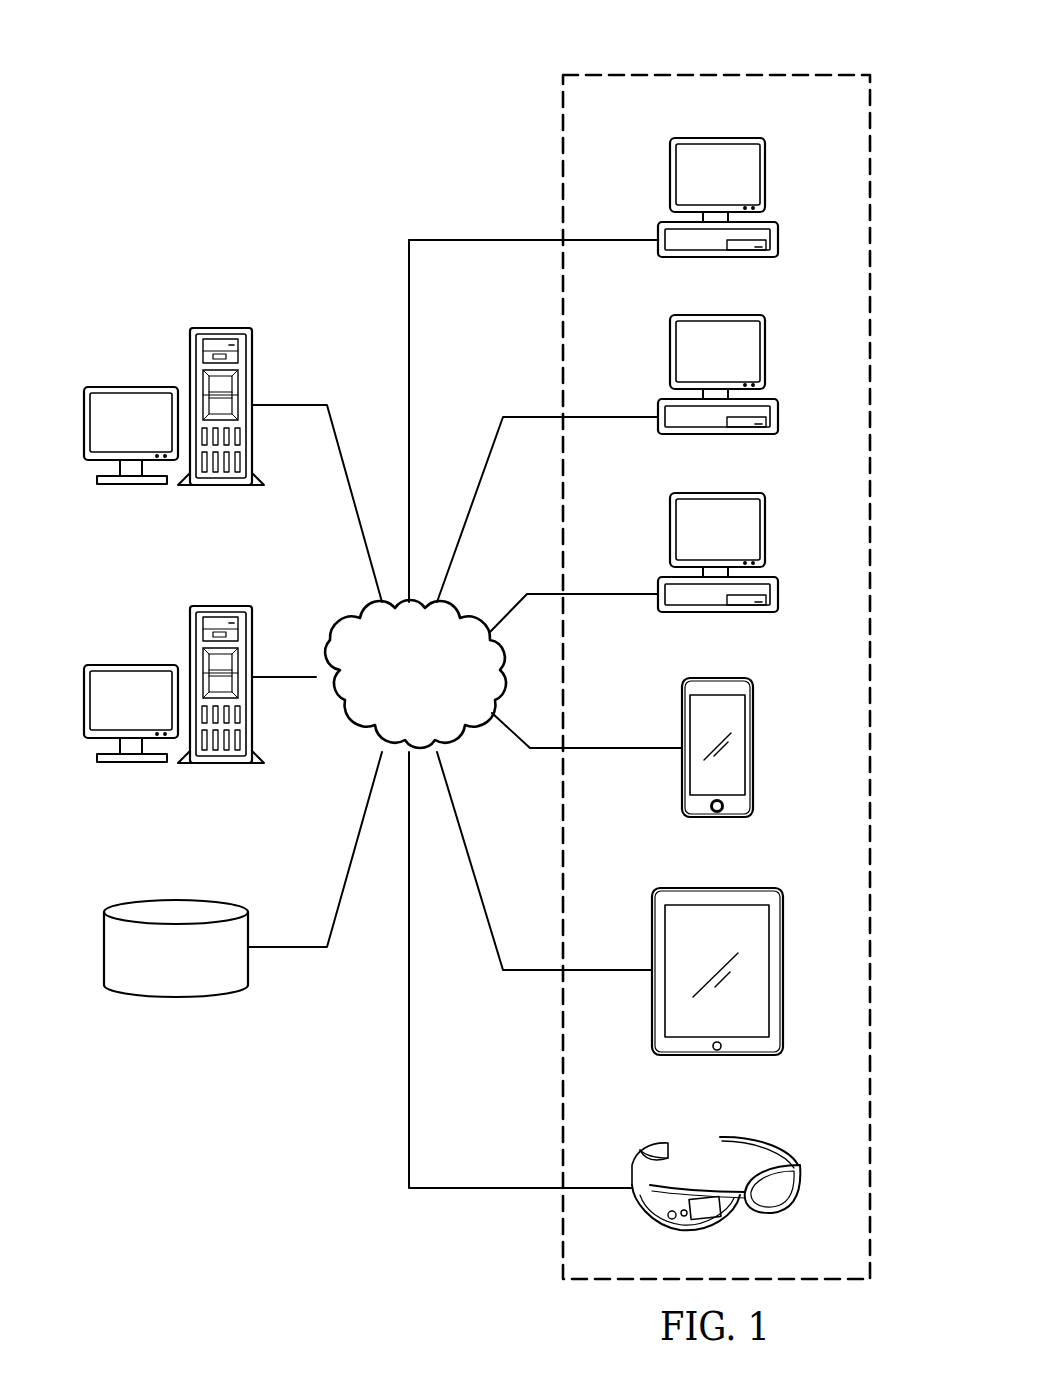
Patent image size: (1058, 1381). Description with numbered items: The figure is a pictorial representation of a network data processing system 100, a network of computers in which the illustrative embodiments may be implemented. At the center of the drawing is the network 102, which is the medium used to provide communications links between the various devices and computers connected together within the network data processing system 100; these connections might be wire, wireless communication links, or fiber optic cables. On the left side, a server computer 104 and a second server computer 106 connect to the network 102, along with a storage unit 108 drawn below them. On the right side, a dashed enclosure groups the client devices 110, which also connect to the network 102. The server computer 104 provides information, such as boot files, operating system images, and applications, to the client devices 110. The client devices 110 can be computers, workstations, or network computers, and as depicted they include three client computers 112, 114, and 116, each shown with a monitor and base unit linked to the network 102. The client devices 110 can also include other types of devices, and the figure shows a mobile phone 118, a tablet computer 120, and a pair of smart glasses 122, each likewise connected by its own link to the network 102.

The network data processing system 100 is at (297, 78).
The network 102 is at (432, 716).
The server computer 104 is at (130, 386).
The server computer 106 is at (130, 664).
The storage unit 108 is at (175, 998).
The client devices 110 is at (774, 66).
The client computer 112 is at (765, 172).
The client computer 114 is at (765, 349).
The client computer 116 is at (765, 527).
The mobile phone 118 is at (753, 760).
The tablet computer 120 is at (783, 985).
The smart glasses 122 is at (767, 1140).